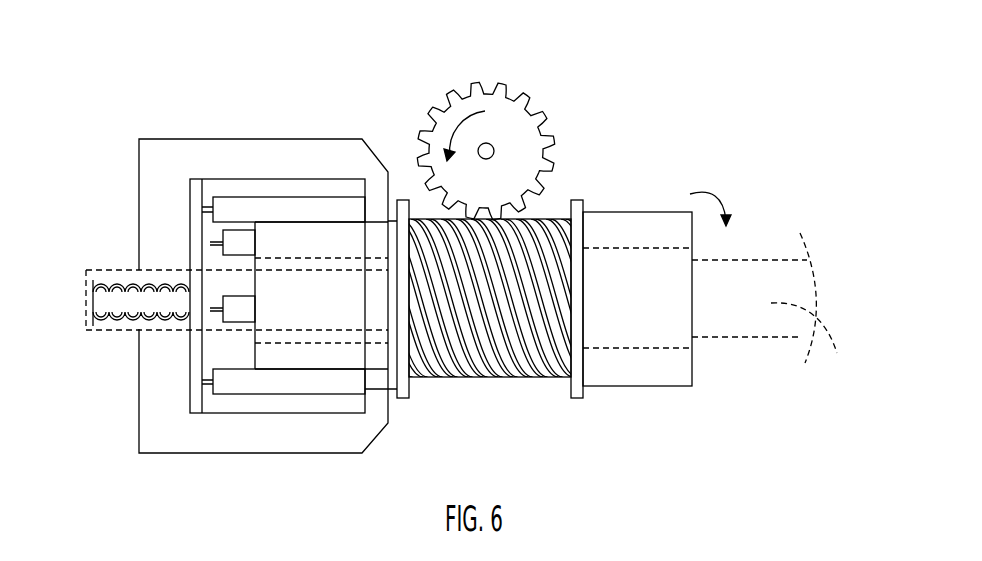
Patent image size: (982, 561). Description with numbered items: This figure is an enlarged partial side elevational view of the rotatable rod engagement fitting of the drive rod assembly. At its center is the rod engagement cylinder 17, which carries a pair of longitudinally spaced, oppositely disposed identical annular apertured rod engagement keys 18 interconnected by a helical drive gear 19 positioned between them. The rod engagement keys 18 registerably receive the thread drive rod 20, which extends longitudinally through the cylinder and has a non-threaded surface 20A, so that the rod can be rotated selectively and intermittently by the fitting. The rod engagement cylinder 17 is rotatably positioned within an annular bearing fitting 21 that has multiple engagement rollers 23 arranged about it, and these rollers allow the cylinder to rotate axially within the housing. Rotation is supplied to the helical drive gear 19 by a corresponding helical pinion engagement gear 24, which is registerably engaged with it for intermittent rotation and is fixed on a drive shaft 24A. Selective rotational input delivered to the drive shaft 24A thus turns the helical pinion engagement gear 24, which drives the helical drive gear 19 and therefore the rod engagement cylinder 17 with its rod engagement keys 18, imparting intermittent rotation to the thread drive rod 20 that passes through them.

The rod engagement cylinder 17 is at (669, 392).
The rod engagement keys 18 is at (647, 210).
The helical drive gear 19 is at (555, 213).
The thread drive rod 20 is at (121, 336).
The non-threaded surface 20A is at (112, 300).
The annular bearing fitting 21 is at (337, 153).
The engagement rollers 23 is at (262, 208).
The helical pinion engagement gear 24 is at (533, 132).
The drive shaft 24A is at (493, 143).